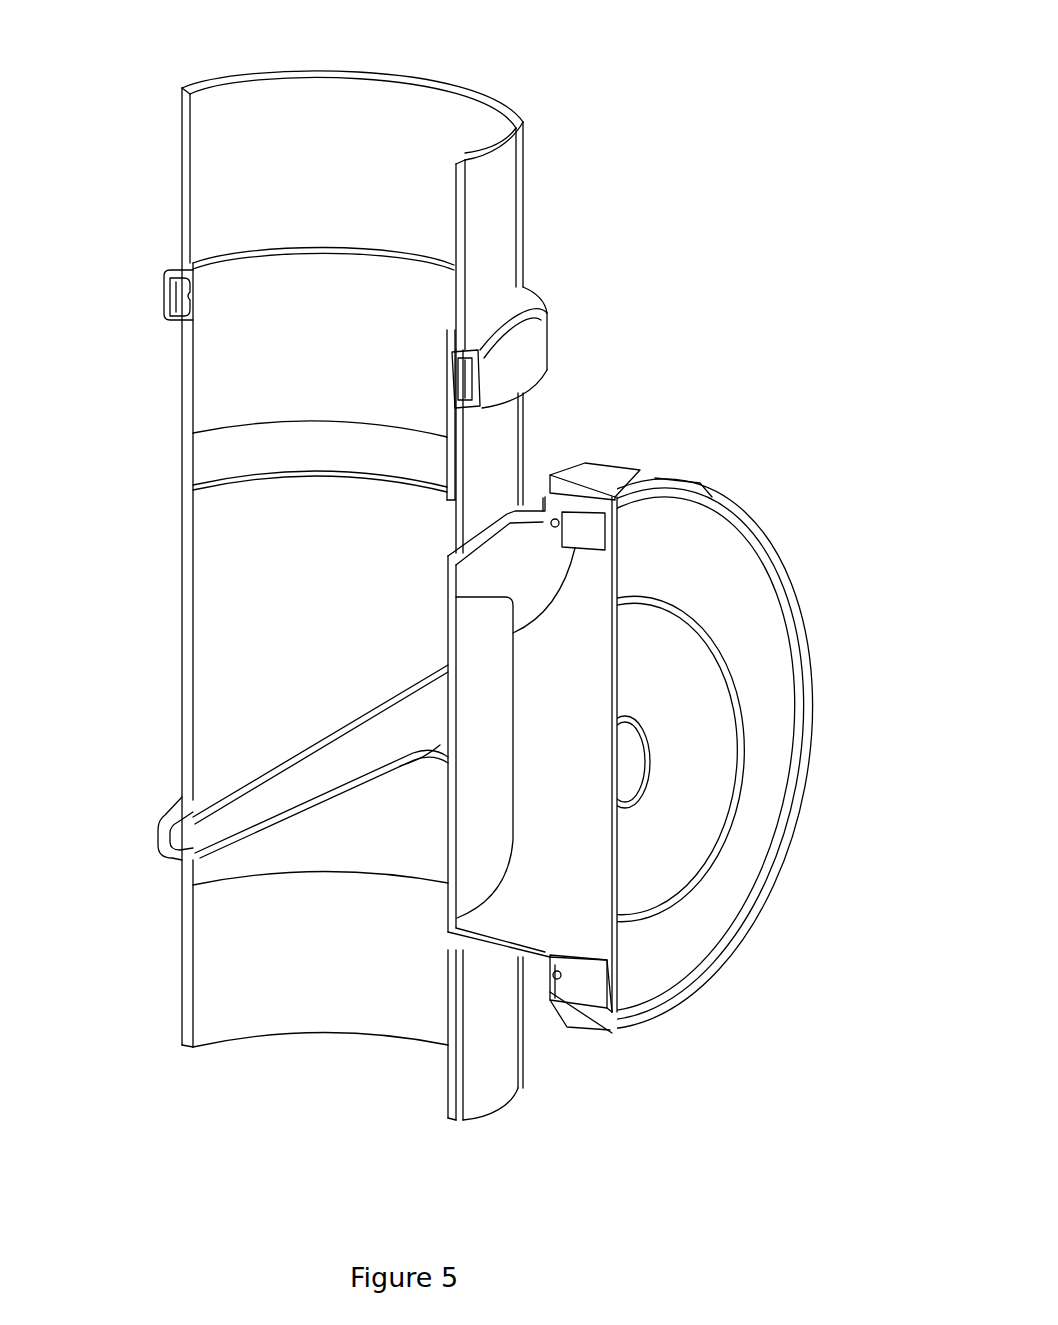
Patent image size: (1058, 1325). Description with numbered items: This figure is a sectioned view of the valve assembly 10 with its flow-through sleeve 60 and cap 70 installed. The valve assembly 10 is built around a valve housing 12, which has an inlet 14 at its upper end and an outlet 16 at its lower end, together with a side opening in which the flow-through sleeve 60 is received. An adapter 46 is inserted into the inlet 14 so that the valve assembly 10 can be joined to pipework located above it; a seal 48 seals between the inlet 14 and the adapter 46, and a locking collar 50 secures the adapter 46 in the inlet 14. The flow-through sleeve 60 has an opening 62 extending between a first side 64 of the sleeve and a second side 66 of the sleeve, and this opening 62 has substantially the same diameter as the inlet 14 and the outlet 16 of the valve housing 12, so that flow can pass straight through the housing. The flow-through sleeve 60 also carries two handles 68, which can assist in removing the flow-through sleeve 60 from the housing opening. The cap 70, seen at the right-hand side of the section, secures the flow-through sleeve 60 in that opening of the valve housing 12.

The valve assembly 10 is at (644, 146).
The valve housing 12 is at (487, 455).
The inlet 14 is at (226, 529).
The outlet 16 is at (256, 996).
The adapter 46 is at (216, 180).
The seal 48 is at (185, 318).
The locking collar 50 is at (540, 347).
The flow-through sleeve 60 is at (520, 915).
The opening 62 is at (248, 818).
The first side 64 is at (263, 785).
The second side 66 is at (372, 778).
The handles 68 is at (573, 535).
The cap 70 is at (757, 614).